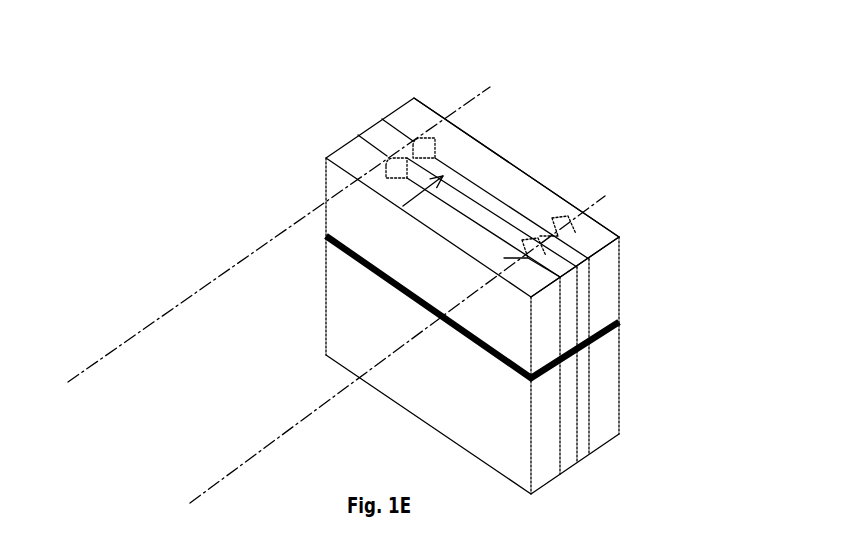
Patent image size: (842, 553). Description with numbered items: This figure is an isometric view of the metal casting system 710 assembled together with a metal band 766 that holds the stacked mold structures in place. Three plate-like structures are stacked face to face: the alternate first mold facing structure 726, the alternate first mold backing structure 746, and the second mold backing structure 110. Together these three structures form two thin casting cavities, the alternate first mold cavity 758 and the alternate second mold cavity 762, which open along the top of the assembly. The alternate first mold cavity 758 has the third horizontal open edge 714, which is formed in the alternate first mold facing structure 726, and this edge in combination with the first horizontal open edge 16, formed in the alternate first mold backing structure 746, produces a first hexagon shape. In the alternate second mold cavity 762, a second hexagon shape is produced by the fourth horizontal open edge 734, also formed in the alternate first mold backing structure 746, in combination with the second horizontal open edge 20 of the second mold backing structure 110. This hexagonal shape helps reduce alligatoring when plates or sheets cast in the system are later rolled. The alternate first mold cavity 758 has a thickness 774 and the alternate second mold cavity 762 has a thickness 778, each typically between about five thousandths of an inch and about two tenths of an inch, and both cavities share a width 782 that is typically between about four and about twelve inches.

The metal casting system 710 is at (276, 111).
The fourth horizontal open edge 734 is at (430, 178).
The alternate first mold cavity 758 is at (444, 153).
The thickness 774 is at (463, 157).
The alternate second mold cavity 762 is at (459, 198).
The third horizontal open edge 714 is at (513, 190).
The first horizontal open edge 16 is at (512, 217).
The thickness 778 is at (518, 232).
The second horizontal open edge 20 is at (407, 178).
The metal band 766 is at (377, 274).
The width 782 is at (255, 460).
The alternate first mold facing structure 726 is at (620, 437).
The alternate first mold backing structure 746 is at (585, 458).
The second mold backing structure 110 is at (546, 480).